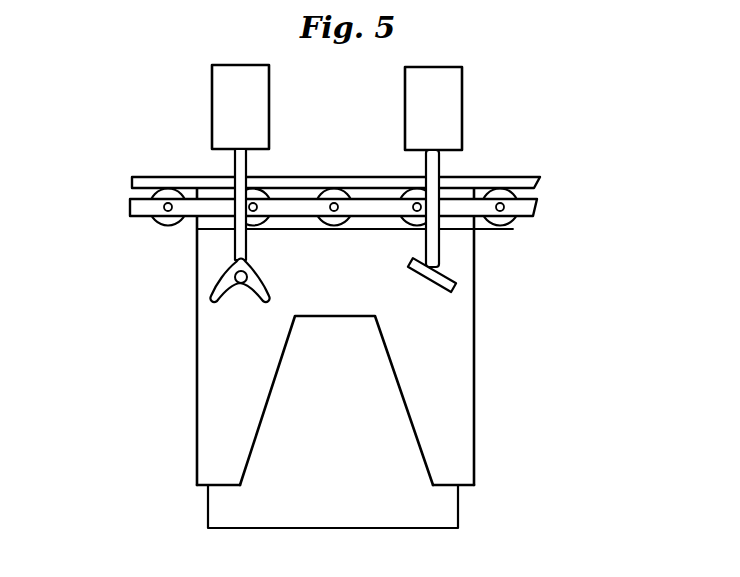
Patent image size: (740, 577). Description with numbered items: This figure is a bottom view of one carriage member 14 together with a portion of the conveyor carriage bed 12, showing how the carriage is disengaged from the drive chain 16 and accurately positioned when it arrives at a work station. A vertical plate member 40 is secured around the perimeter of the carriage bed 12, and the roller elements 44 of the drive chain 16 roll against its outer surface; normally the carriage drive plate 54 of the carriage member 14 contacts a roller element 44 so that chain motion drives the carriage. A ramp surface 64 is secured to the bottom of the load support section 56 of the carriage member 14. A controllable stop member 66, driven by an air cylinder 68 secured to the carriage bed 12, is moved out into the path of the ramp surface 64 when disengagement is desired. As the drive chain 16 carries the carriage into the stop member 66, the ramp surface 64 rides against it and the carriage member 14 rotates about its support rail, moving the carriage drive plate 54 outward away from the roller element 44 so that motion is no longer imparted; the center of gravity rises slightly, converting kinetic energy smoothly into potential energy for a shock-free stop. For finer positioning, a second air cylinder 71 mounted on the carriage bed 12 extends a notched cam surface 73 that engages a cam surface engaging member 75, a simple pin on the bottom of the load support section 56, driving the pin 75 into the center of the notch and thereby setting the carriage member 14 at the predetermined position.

The carriage bed 12 is at (352, 151).
The carriage member 14 is at (193, 452).
The drive chain 16 is at (533, 222).
The vertical plate member 40 is at (510, 194).
The roller element 44 is at (334, 227).
The carriage drive plate 54 is at (380, 230).
The load support section 56 is at (475, 376).
The ramp surface 64 is at (430, 280).
The stop member 66 is at (440, 248).
The air cylinder 68 is at (462, 97).
The air cylinder 71 is at (212, 90).
The notched cam surface 73 is at (222, 277).
The cam surface engaging member 75 is at (238, 282).